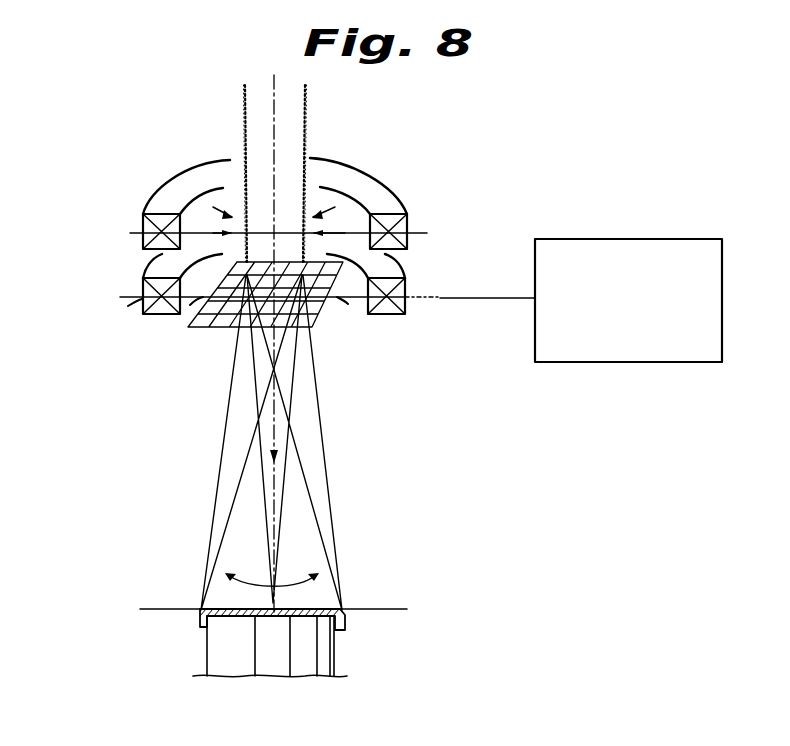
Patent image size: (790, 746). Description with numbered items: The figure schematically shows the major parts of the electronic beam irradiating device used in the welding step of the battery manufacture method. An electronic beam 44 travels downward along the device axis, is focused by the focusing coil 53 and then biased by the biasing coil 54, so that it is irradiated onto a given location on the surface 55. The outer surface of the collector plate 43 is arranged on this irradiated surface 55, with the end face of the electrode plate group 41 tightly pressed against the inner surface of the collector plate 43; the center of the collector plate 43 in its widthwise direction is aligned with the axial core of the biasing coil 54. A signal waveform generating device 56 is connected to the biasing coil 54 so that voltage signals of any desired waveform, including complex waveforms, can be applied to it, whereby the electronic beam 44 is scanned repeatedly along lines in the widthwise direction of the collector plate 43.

The electronic beam 44 is at (288, 118).
The focusing coil 53 is at (143, 218).
The biasing coil 54 is at (143, 303).
The surface 55 is at (164, 608).
The signal waveform generating device 56 is at (623, 355).
The collector plate 43 is at (198, 617).
The electrode plate group 41 is at (206, 658).